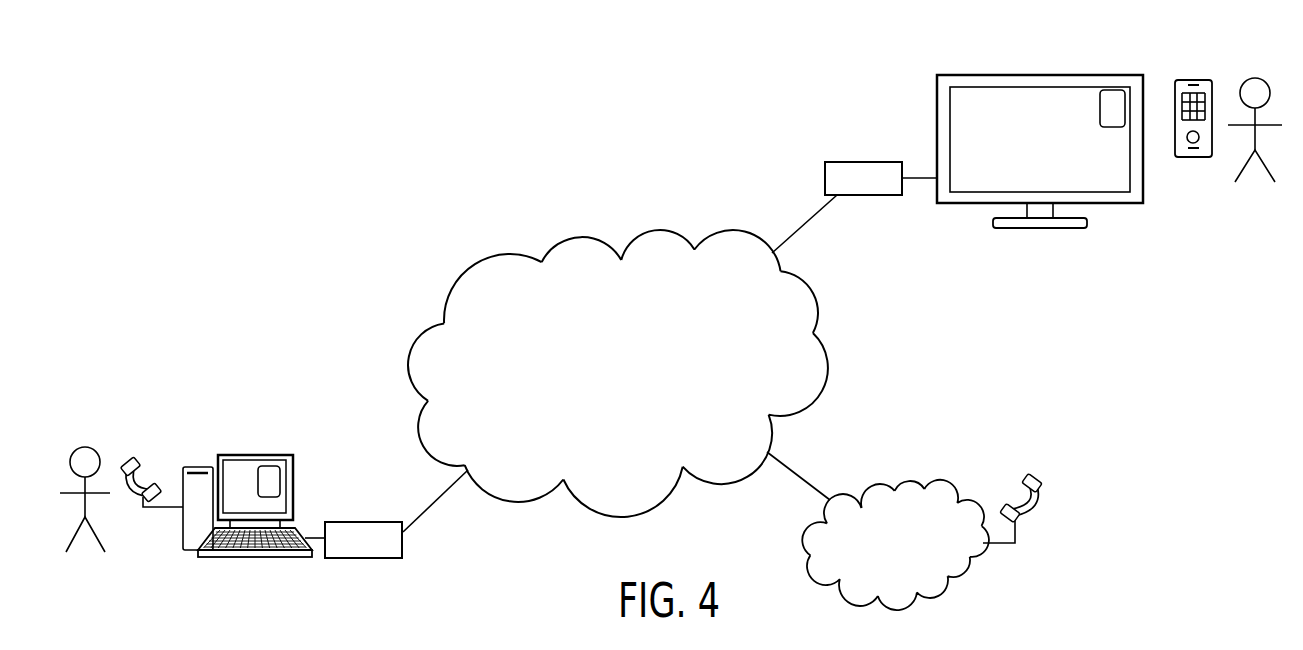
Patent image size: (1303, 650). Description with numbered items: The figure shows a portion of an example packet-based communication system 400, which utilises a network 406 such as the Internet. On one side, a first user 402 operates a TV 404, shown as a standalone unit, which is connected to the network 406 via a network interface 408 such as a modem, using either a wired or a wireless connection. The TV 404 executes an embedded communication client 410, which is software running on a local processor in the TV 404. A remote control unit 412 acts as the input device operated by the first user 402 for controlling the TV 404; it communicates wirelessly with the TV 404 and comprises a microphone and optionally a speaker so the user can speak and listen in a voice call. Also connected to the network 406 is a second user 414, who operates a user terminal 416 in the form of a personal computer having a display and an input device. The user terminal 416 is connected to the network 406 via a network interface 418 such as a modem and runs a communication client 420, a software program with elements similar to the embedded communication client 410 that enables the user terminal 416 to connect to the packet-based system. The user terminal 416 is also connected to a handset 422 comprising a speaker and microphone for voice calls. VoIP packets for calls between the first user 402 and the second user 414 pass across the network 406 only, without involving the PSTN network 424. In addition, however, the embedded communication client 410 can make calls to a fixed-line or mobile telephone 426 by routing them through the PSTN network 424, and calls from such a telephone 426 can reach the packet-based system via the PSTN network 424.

The system 400 is at (403, 191).
The first user 402 is at (1254, 73).
The TV 404 is at (984, 75).
The network 406 is at (822, 373).
The network interface 408 is at (860, 161).
The embedded communication client 410 is at (1113, 90).
The remote control unit 412 is at (1194, 80).
The second user 414 is at (84, 447).
The user terminal 416 is at (222, 452).
The network interface 418 is at (360, 521).
The communication client 420 is at (268, 464).
The handset 422 is at (141, 457).
The PSTN network 424 is at (961, 579).
The fixed-line or mobile telephone 426 is at (1032, 478).